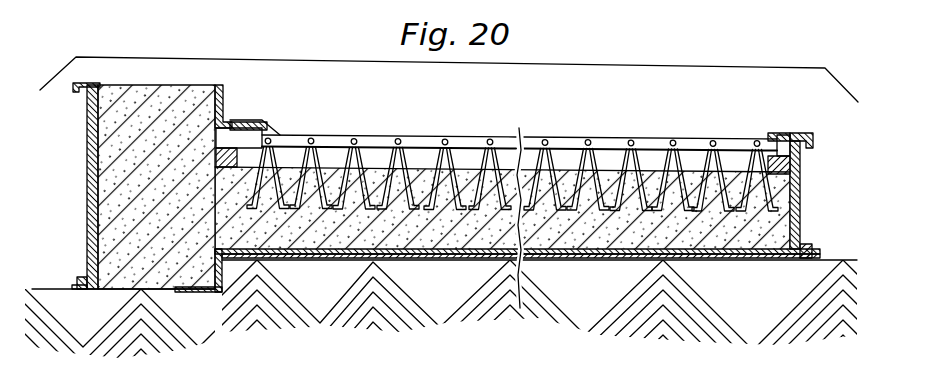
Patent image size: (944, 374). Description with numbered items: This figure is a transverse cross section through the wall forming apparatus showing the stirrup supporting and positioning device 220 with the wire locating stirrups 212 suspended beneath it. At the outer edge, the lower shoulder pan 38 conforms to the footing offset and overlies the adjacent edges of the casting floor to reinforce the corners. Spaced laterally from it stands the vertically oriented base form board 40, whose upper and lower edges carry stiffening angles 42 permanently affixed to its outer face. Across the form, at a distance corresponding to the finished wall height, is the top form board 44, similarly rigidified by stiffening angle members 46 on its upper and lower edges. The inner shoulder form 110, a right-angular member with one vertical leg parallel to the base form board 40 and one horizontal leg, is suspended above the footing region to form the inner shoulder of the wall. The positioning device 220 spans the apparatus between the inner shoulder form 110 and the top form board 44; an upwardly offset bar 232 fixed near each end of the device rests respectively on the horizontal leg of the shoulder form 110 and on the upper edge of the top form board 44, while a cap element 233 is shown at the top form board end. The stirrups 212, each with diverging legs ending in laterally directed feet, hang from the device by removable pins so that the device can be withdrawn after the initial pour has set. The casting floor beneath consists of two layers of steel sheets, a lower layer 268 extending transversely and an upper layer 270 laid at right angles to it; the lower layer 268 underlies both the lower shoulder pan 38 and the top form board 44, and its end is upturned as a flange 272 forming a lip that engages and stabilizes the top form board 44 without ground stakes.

The lower shoulder pan 38 is at (222, 282).
The base form board 40 is at (88, 185).
The stiffening angles 42 is at (75, 92).
The top form board 44 is at (796, 189).
The stiffening angle members 46 is at (808, 137).
The inner shoulder form 110 is at (223, 104).
The wire locating stirrups 212 is at (434, 158).
The supporting or positioning device 220 is at (561, 133).
The upwardly offset bar 232 is at (248, 122).
The cap plate 233 is at (773, 133).
The lower layer 268 is at (402, 262).
The upper layer 270 is at (482, 262).
The flange 272 is at (813, 260).